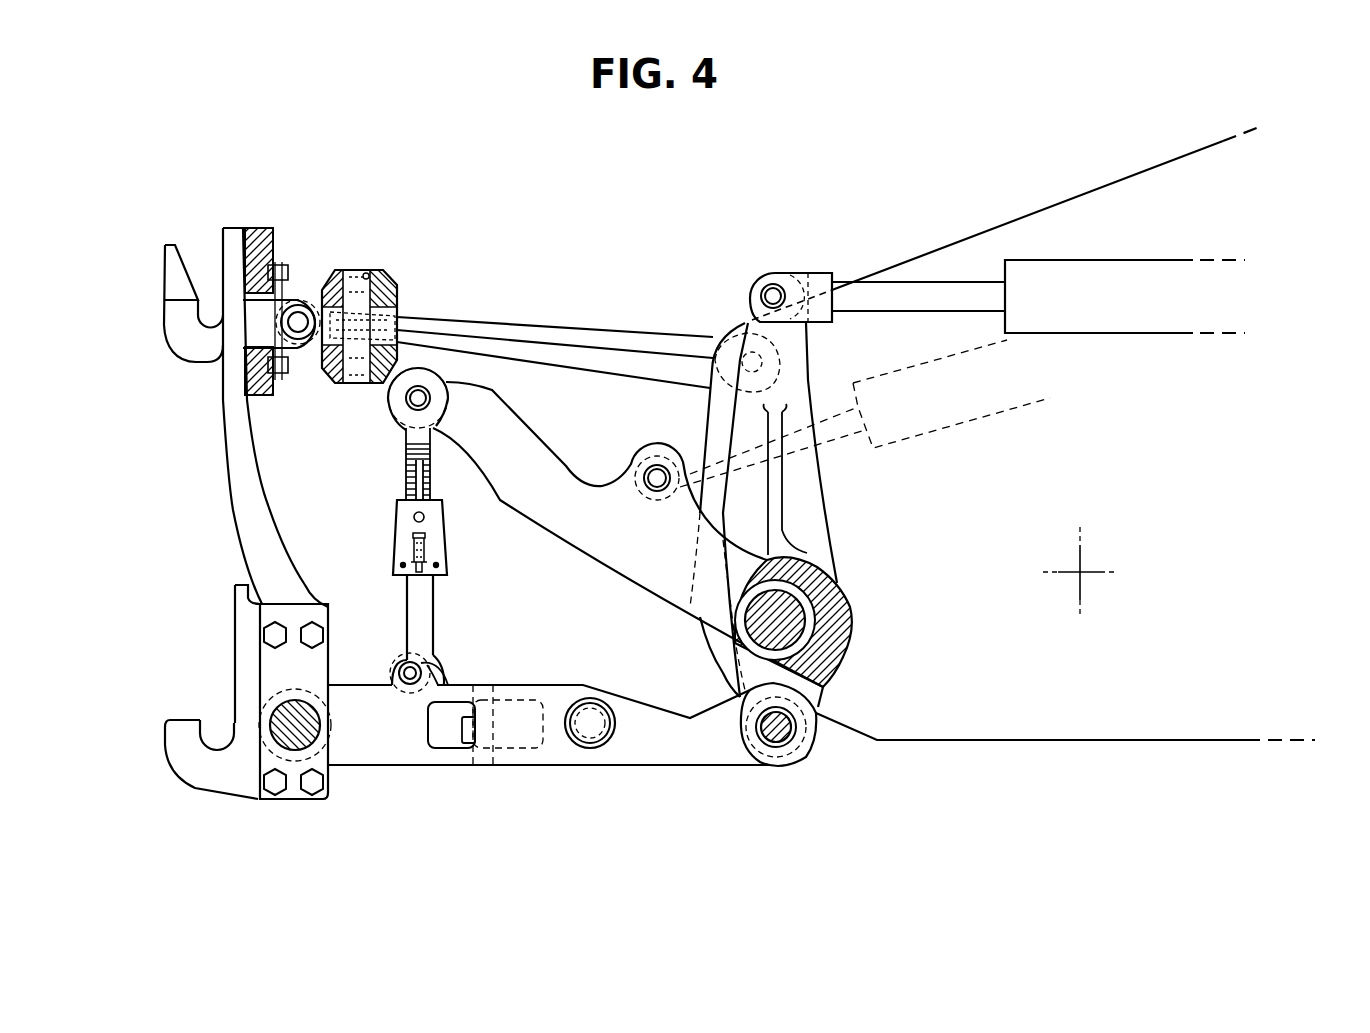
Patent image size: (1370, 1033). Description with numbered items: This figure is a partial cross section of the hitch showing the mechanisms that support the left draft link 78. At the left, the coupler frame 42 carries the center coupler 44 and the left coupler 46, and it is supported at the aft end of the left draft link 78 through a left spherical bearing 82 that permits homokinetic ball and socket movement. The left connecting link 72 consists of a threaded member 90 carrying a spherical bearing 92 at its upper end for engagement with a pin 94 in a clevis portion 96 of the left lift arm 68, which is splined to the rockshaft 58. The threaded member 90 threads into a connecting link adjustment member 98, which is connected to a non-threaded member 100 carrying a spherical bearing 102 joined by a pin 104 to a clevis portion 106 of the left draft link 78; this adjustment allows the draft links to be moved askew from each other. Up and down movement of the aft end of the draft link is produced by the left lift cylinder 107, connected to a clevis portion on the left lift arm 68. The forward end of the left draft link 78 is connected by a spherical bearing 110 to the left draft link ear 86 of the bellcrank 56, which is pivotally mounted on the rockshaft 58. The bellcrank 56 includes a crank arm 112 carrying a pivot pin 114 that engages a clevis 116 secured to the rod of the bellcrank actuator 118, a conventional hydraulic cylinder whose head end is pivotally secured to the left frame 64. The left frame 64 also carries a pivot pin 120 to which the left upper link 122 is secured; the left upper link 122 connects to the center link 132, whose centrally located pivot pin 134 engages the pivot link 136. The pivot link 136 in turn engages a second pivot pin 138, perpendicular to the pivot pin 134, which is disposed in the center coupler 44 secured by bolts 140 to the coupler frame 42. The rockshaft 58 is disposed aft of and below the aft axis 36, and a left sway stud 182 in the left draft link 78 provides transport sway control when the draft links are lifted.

The aft axis 36 is at (1082, 570).
The coupler frame 42 is at (225, 480).
The center coupler 44 is at (185, 360).
The left coupler 46 is at (183, 720).
The bellcrank 56 is at (847, 595).
The rockshaft 58 is at (807, 627).
The left frame 64 is at (959, 250).
The left lift arm 68 is at (549, 463).
The left connecting link 72 is at (380, 518).
The left draft link 78 is at (715, 768).
The left spherical bearing 82 is at (322, 756).
The left draft link ear 86 is at (824, 693).
The threaded member 90 is at (432, 470).
The spherical bearing 92 is at (425, 382).
The pin 94 is at (431, 398).
The clevis portion 96 is at (456, 378).
The connecting link adjustment member 98 is at (447, 548).
The non-threaded member 100 is at (428, 613).
The spherical bearing 102 is at (437, 662).
The pin 104 is at (447, 672).
The clevis portion 106 is at (398, 672).
The left lift cylinder 107 is at (885, 400).
The spherical bearing 110 is at (792, 737).
The crank arm 112 is at (822, 494).
The pivot pin 114 is at (778, 292).
The clevis 116 is at (760, 282).
The bellcrank actuator 118 is at (1087, 272).
The pivot pin 120 is at (745, 350).
The left upper link 122 is at (596, 322).
The center link 132 is at (340, 270).
The pivot pin 134 is at (372, 270).
The pivot link 136 is at (393, 315).
The second pivot pin 138 is at (297, 326).
The bolts 140 is at (290, 265).
The left sway stud 182 is at (597, 749).